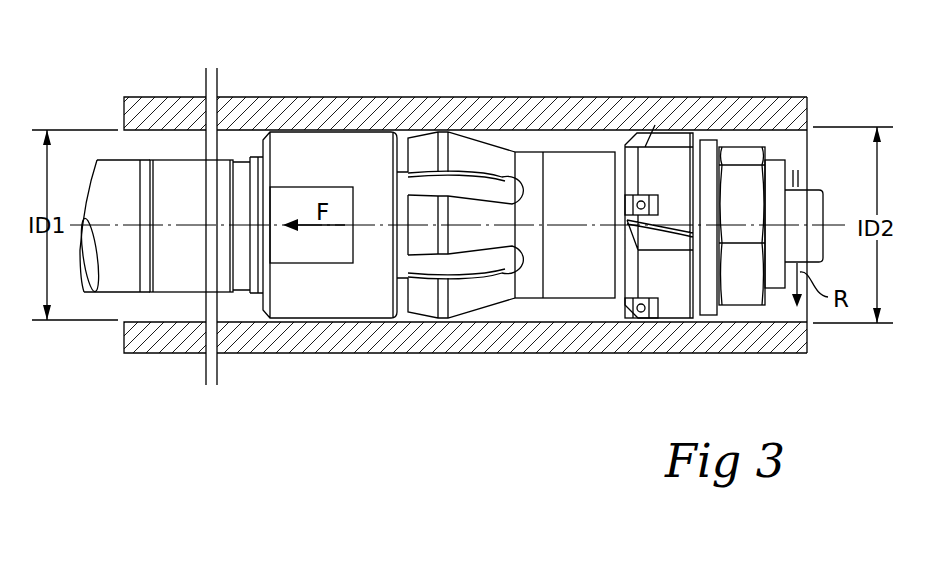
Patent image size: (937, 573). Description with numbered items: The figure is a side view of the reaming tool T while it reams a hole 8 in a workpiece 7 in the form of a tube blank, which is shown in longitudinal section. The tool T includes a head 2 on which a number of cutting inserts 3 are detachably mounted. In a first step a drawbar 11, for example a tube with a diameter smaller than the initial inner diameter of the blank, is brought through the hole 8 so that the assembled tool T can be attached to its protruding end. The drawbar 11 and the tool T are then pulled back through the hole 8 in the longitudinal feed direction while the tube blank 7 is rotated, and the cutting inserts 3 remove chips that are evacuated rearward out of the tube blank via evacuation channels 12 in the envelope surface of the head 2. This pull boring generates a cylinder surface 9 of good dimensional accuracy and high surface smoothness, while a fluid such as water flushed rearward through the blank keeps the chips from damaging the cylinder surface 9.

The head 2 is at (708, 125).
The cutting inserts 3 is at (610, 201).
The workpiece 7 is at (326, 112).
The hole 8 is at (237, 143).
The cylinder surface 9 is at (745, 316).
The drawbar 11 is at (101, 173).
The evacuation channels 12 is at (645, 233).
The reaming tool T is at (540, 133).